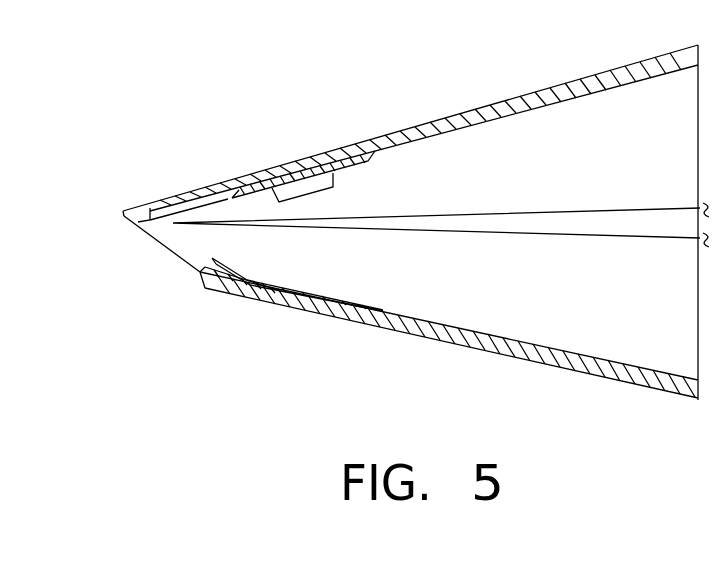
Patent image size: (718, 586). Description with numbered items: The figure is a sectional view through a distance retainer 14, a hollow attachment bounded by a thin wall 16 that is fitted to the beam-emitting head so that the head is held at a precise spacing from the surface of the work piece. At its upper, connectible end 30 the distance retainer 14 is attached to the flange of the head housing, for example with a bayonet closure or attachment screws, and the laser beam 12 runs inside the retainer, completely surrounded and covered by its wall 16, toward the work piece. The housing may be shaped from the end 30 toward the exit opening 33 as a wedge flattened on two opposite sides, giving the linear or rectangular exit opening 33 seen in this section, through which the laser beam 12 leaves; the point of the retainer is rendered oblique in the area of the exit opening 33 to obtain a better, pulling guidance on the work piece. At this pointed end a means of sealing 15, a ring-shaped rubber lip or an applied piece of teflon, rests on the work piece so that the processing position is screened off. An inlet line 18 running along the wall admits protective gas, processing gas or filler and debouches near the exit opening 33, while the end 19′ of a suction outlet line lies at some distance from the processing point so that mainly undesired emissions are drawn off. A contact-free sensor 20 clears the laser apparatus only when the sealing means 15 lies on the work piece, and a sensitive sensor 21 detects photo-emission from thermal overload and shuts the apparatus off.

The laser beam 12 is at (578, 221).
The distance retainer 14 is at (410, 125).
The means of sealing 15 is at (204, 285).
The thin wall 16 is at (420, 125).
The inlet line 18 is at (302, 304).
The end of the outlet line 19′ is at (234, 190).
The sensor 20 is at (270, 130).
The sensitive sensor 21 is at (298, 196).
The end of the distance retainer 30 is at (699, 418).
The exit opening 33 is at (150, 255).